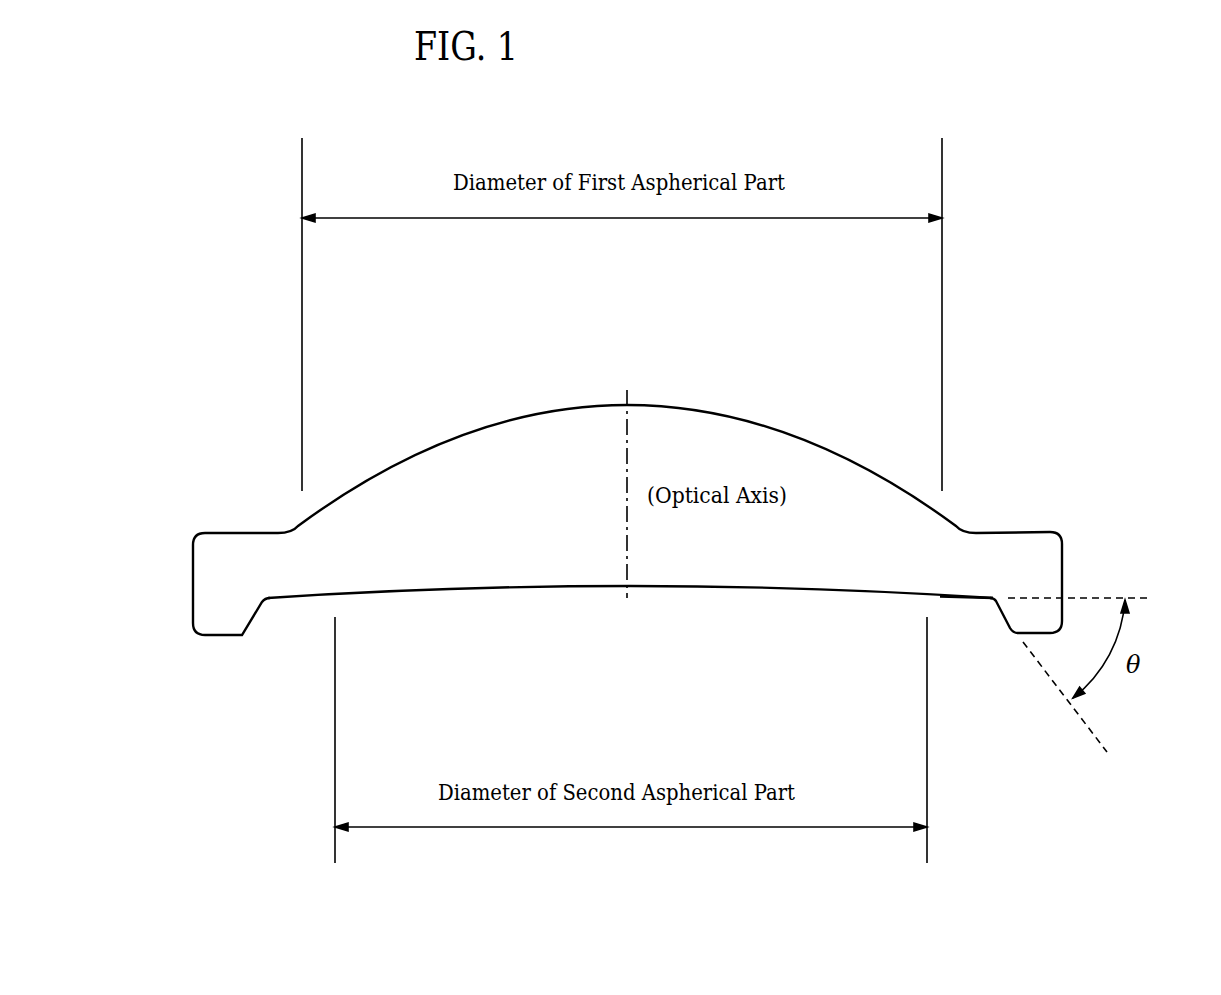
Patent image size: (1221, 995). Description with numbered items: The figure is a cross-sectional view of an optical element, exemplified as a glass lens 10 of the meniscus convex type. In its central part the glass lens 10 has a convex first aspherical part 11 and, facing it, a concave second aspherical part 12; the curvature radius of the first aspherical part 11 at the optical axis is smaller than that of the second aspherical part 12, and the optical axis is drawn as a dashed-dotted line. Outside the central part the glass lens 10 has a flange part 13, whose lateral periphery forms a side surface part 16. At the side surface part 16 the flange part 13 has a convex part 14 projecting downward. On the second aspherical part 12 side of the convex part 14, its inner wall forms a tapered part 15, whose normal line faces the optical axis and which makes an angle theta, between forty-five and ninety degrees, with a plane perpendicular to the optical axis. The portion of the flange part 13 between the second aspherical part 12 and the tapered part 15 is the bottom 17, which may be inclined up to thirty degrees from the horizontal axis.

The glass lens 10 is at (192, 310).
The first aspherical part 11 is at (600, 403).
The second aspherical part 12 is at (668, 586).
The flange part 13 is at (240, 558).
The convex part 14 is at (227, 622).
The tapered part 15 is at (1000, 615).
The side surface part 16 is at (1063, 555).
The bottom 17 is at (958, 600).